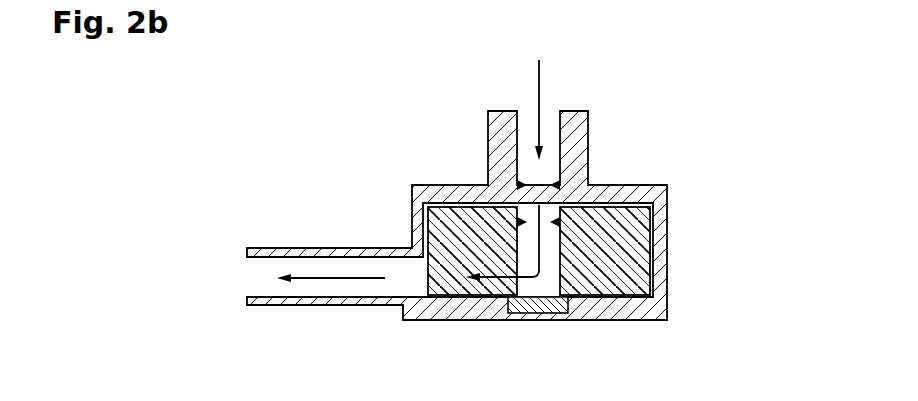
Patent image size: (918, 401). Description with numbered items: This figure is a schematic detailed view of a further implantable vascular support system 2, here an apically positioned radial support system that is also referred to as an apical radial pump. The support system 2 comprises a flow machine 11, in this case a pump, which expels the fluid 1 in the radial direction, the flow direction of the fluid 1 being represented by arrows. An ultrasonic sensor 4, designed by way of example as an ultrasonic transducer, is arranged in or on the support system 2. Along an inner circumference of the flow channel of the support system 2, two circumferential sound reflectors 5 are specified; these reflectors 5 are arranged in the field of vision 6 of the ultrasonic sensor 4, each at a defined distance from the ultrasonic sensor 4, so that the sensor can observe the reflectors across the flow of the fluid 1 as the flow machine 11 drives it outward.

The fluid 1 is at (539, 83).
The implantable vascular support system 2 is at (663, 112).
The ultrasonic sensor 4 is at (547, 313).
The circumferential sound reflector 5 is at (562, 223).
The field of vision 6 is at (533, 188).
The flow machine 11 is at (618, 280).